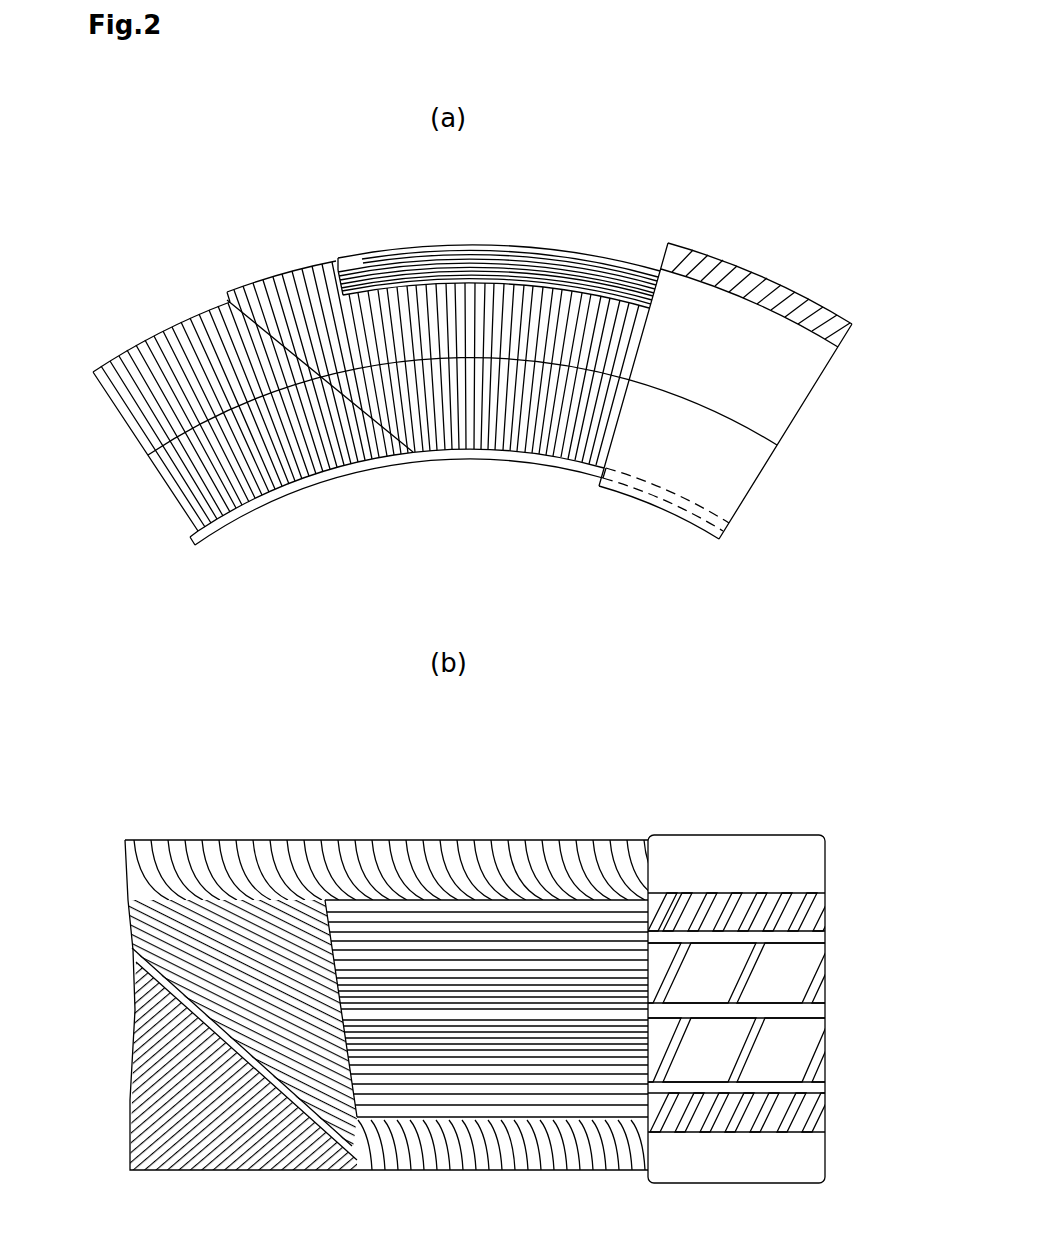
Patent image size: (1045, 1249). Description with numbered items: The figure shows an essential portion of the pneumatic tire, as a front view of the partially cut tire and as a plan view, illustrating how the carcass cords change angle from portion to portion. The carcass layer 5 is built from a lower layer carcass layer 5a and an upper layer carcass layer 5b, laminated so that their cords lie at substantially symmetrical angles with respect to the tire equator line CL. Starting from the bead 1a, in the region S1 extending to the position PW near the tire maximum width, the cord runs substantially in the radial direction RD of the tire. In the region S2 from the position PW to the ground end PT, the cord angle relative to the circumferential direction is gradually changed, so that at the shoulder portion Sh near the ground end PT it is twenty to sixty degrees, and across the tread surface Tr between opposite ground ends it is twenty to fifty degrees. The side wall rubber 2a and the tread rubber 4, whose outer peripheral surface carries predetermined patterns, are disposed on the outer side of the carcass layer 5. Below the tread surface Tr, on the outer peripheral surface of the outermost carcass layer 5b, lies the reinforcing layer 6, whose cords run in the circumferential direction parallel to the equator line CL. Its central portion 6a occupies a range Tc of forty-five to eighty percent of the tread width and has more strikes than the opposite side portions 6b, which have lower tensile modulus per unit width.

The bead 1a is at (207, 546).
The side wall rubber 2a is at (776, 838).
The tread rubber 4 is at (778, 275).
The carcass layer 5 is at (386, 700).
The lower layer carcass layer 5a is at (178, 322).
The upper layer carcass layer 5b is at (247, 300).
The reinforcing layer 6 is at (551, 248).
The central portion 6a is at (392, 1005).
The side portions 6b is at (458, 915).
The radial direction RD is at (452, 236).
The region from bead to position near maximum width S1 is at (781, 516).
The region from maximum-width position to ground end S2 is at (741, 544).
The position near tire maximum width PW is at (817, 478).
The shoulder portion Sh is at (565, 866).
The range of central portion Tc is at (673, 1048).
The tread surface Tr is at (858, 835).
The ground end PT is at (885, 1014).
The tire equator line CL is at (835, 1013).